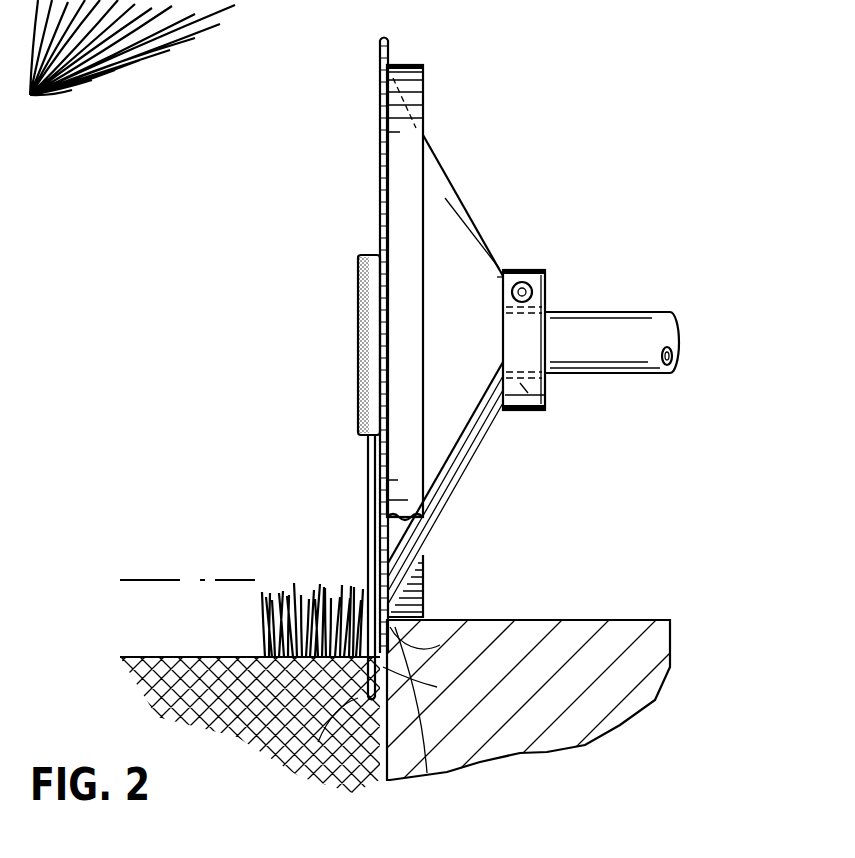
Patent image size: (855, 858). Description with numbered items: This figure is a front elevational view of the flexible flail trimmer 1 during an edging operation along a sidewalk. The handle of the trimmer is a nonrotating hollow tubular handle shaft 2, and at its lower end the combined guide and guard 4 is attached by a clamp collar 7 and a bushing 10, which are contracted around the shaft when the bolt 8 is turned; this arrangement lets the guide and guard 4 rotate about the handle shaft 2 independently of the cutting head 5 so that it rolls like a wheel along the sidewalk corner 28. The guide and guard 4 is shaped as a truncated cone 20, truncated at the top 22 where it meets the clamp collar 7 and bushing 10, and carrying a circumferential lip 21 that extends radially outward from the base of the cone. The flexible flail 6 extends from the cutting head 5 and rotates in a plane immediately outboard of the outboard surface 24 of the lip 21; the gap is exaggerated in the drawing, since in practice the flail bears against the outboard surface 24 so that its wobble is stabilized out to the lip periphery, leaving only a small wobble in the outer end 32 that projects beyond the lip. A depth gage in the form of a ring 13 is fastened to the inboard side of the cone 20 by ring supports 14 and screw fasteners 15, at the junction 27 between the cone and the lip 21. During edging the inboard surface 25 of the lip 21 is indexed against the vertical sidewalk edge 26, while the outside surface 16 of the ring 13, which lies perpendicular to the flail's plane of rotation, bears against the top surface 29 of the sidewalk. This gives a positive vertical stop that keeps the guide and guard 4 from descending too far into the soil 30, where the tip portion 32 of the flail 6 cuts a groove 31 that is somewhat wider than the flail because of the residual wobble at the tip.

The flexible flail trimmer 1 is at (660, 214).
The handle shaft 2 is at (633, 312).
The combined guide and guard 4 is at (450, 173).
The cutting head 5 is at (358, 330).
The flexible flail 6 is at (368, 517).
The clamp collar 7 is at (527, 267).
The bolt 8 is at (532, 293).
The bushing 10 is at (548, 401).
The ring 13 is at (424, 106).
The ring supports 14 is at (427, 590).
The screw fasteners 15 is at (428, 553).
The outside surface 16 is at (467, 620).
The truncated cone 20 is at (473, 310).
The circumferential lip 21 is at (388, 38).
The top of cone 22 is at (503, 262).
The outboard surface of lip 24 is at (383, 56).
The inboard surface of lip 25 is at (393, 56).
The vertical sidewalk edge 26 is at (378, 703).
The junction 27 is at (398, 66).
The sidewalk corner 28 is at (424, 681).
The top surface of sidewalk 29 is at (568, 619).
The soil 30 is at (207, 670).
The groove 31 is at (427, 773).
The outer end of flail 32 is at (318, 742).